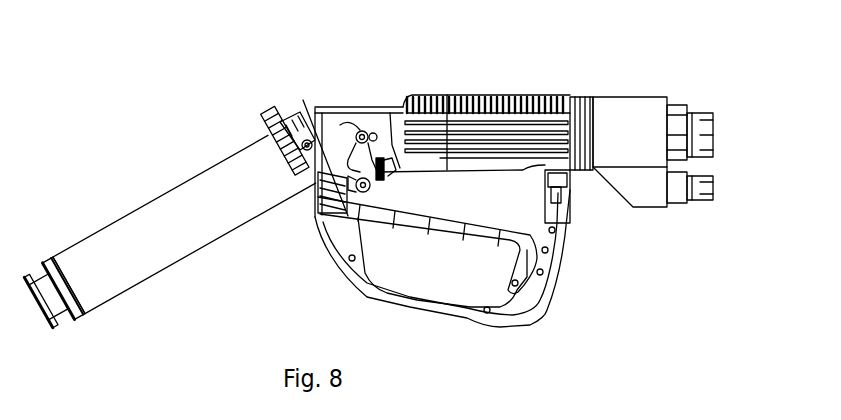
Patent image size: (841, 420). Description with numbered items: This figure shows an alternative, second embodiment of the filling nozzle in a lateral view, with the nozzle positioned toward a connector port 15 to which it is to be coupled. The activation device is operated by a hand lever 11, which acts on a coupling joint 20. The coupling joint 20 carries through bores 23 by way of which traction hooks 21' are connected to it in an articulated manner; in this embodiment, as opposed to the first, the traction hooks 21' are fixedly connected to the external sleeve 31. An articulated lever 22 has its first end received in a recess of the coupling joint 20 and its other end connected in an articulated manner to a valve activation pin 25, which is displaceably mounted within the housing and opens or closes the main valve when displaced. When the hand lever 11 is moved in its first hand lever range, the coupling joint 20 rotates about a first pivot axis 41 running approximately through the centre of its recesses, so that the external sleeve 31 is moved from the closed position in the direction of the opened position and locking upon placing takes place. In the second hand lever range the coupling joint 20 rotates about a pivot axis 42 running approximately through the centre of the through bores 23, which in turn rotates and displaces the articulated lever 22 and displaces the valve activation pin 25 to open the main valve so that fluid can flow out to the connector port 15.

The hand lever 11 is at (417, 227).
The connector port 15 is at (55, 305).
The coupling joint 20 is at (332, 160).
The traction hooks 21' is at (251, 126).
The articulated lever 22 is at (353, 173).
The through bores 23 is at (293, 110).
The valve activation pin 25 is at (385, 167).
The external sleeve 31 is at (115, 247).
The first pivot axis 41 is at (315, 217).
The pivot axis 42 is at (274, 91).